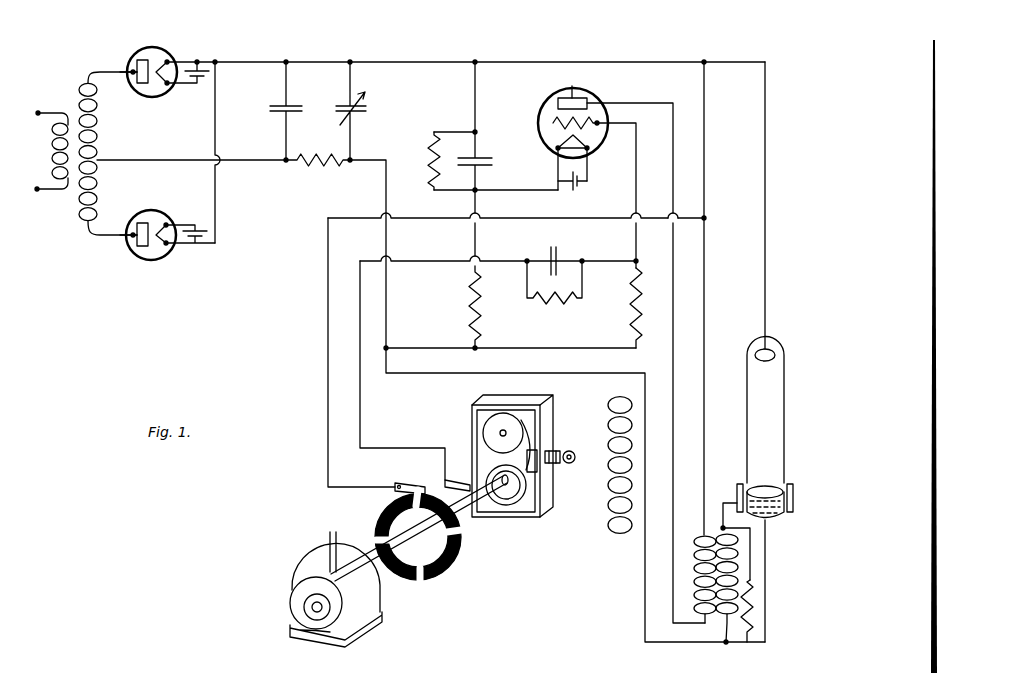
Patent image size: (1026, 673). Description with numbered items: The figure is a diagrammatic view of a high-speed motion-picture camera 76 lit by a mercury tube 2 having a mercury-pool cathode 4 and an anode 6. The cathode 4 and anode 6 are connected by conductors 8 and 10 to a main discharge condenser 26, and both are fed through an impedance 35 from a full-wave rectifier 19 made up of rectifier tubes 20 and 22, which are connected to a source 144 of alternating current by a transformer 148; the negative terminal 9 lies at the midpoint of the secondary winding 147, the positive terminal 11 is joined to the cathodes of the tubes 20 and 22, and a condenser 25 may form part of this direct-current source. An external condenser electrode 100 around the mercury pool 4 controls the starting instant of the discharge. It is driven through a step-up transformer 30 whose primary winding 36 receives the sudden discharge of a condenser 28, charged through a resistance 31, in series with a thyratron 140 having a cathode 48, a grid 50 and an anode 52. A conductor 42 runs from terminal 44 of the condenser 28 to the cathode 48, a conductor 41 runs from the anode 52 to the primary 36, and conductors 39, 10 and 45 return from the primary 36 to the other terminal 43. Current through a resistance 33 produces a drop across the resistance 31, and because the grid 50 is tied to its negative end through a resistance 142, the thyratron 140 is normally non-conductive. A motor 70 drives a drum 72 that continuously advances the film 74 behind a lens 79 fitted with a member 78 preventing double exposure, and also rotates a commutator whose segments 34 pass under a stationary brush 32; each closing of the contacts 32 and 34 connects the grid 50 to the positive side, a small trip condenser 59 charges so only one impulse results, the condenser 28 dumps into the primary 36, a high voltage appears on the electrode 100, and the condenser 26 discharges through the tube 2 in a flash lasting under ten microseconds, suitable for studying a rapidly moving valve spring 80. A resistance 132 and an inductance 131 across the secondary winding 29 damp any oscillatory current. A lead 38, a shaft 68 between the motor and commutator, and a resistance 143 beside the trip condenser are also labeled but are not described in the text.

The mercury tube 2 is at (747, 402).
The mercury-pool cathode 4 is at (775, 516).
The anode 6 is at (773, 352).
The conductor 8 is at (426, 376).
The negative terminal 9 is at (97, 158).
The conductor 10 is at (598, 62).
The positive terminal 11 is at (218, 60).
The full-wave rectifier 19 is at (159, 133).
The rectifier tube 20 is at (160, 48).
The rectifier tube 22 is at (148, 262).
The condenser 25 is at (272, 108).
The main discharge condenser 26 is at (336, 107).
The condenser 28 is at (493, 163).
The secondary winding 29 is at (753, 579).
The step-up transformer 30 is at (722, 501).
The resistance 31 is at (470, 311).
The stationary brush 32 is at (398, 483).
The resistance 33 is at (430, 156).
The movable contact members 34 is at (414, 512).
The impedance 35 is at (312, 172).
The primary winding 36 is at (695, 593).
The conductor 38 is at (475, 60).
The conductor 39 is at (706, 106).
The conductor 41 is at (676, 196).
The conductor 42 is at (531, 192).
The terminal 43 is at (475, 131).
The terminal 44 is at (475, 192).
The conductor 45 is at (470, 86).
The cathode 48 is at (560, 146).
The grid 50 is at (556, 119).
The anode 52 is at (572, 88).
The trip condenser 59 is at (558, 246).
The shaft 68 is at (380, 576).
The motor 70 is at (300, 594).
The drum 72 is at (505, 500).
The band of film 74 is at (536, 491).
The camera 76 is at (541, 520).
The member 78 is at (568, 464).
The lens 79 is at (560, 452).
The valve spring 80 is at (620, 542).
The external condenser electrode 100 is at (738, 485).
The inductance 131 is at (752, 560).
The resistance 132 is at (742, 634).
The thyratron 140 is at (598, 98).
The resistance 142 is at (626, 306).
The resistor 143 is at (541, 311).
The source of alternating current 144 is at (49, 113).
The secondary winding 147 is at (98, 191).
The transformer 148 is at (70, 192).